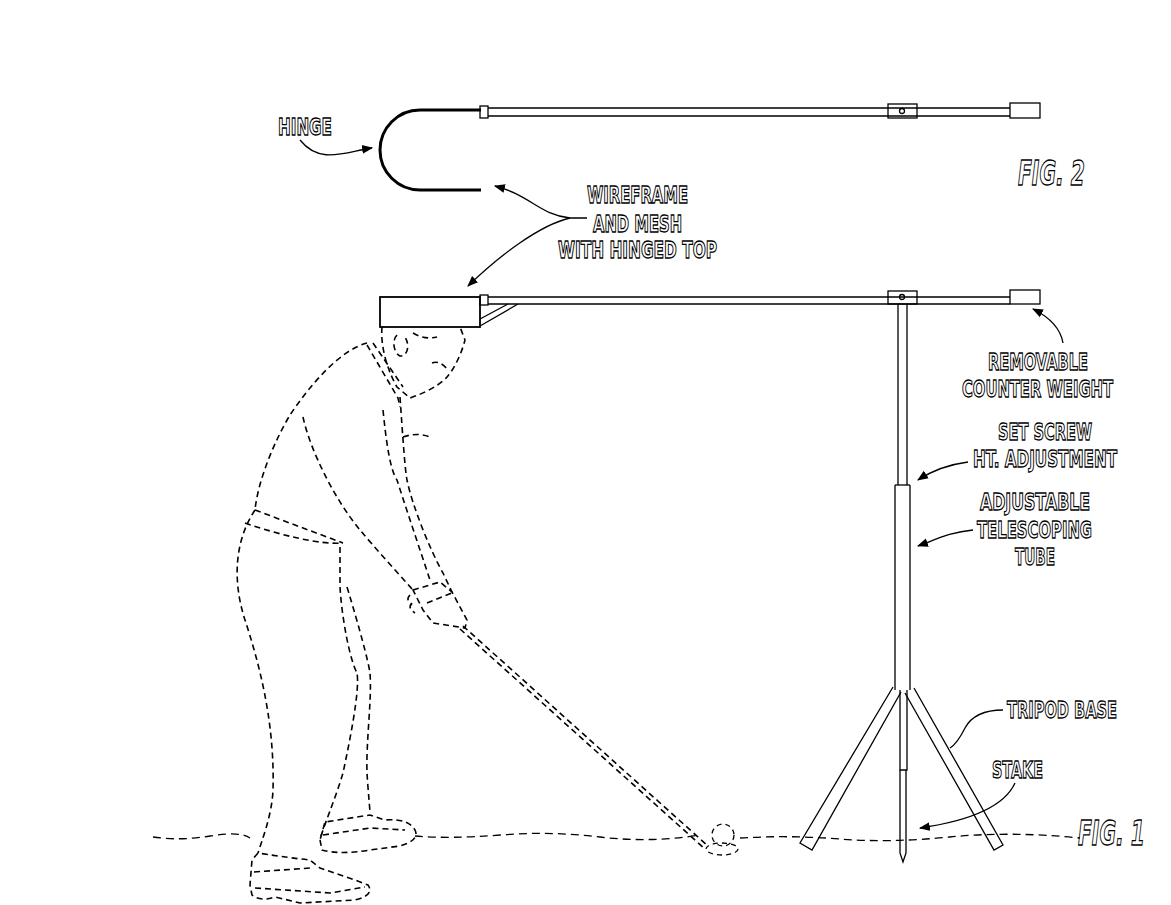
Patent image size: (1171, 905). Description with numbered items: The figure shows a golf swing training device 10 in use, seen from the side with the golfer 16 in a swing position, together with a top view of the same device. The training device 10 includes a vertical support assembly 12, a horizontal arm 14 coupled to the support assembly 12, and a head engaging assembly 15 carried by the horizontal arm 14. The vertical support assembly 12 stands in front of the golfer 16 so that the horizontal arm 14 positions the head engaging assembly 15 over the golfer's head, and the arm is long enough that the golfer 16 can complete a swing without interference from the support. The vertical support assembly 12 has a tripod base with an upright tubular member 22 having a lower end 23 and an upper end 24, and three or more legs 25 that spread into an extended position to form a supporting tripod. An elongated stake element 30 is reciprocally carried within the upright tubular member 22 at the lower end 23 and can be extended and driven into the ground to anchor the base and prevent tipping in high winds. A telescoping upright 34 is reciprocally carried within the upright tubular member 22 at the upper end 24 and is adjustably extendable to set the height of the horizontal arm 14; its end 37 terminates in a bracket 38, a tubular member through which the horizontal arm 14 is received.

In FIG. 2, the golf swing training device 10 is at (600, 122).
In FIG. 1, the golf swing training device 10 is at (868, 606).
In FIG. 2, the vertical support assembly 12 is at (905, 126).
In FIG. 1, the vertical support assembly 12 is at (918, 627).
In FIG. 2, the horizontal arm 14 is at (690, 124).
In FIG. 1, the horizontal arm 14 is at (767, 310).
In FIG. 2, the head engaging assembly 15 is at (397, 102).
In FIG. 1, the head engaging assembly 15 is at (382, 288).
In FIG. 1, the golfer 16 is at (430, 437).
In FIG. 1, the upright tubular member 22 is at (912, 657).
In FIG. 1, the lower end 23 is at (892, 763).
In FIG. 1, the upper end 24 is at (894, 498).
In FIG. 1, the legs 25 is at (847, 767).
In FIG. 1, the elongated stake element 30 is at (908, 791).
In FIG. 1, the telescoping upright 34 is at (897, 375).
In FIG. 1, the end 37 is at (908, 312).
In FIG. 2, the bracket 38 is at (910, 103).
In FIG. 1, the bracket 38 is at (893, 291).